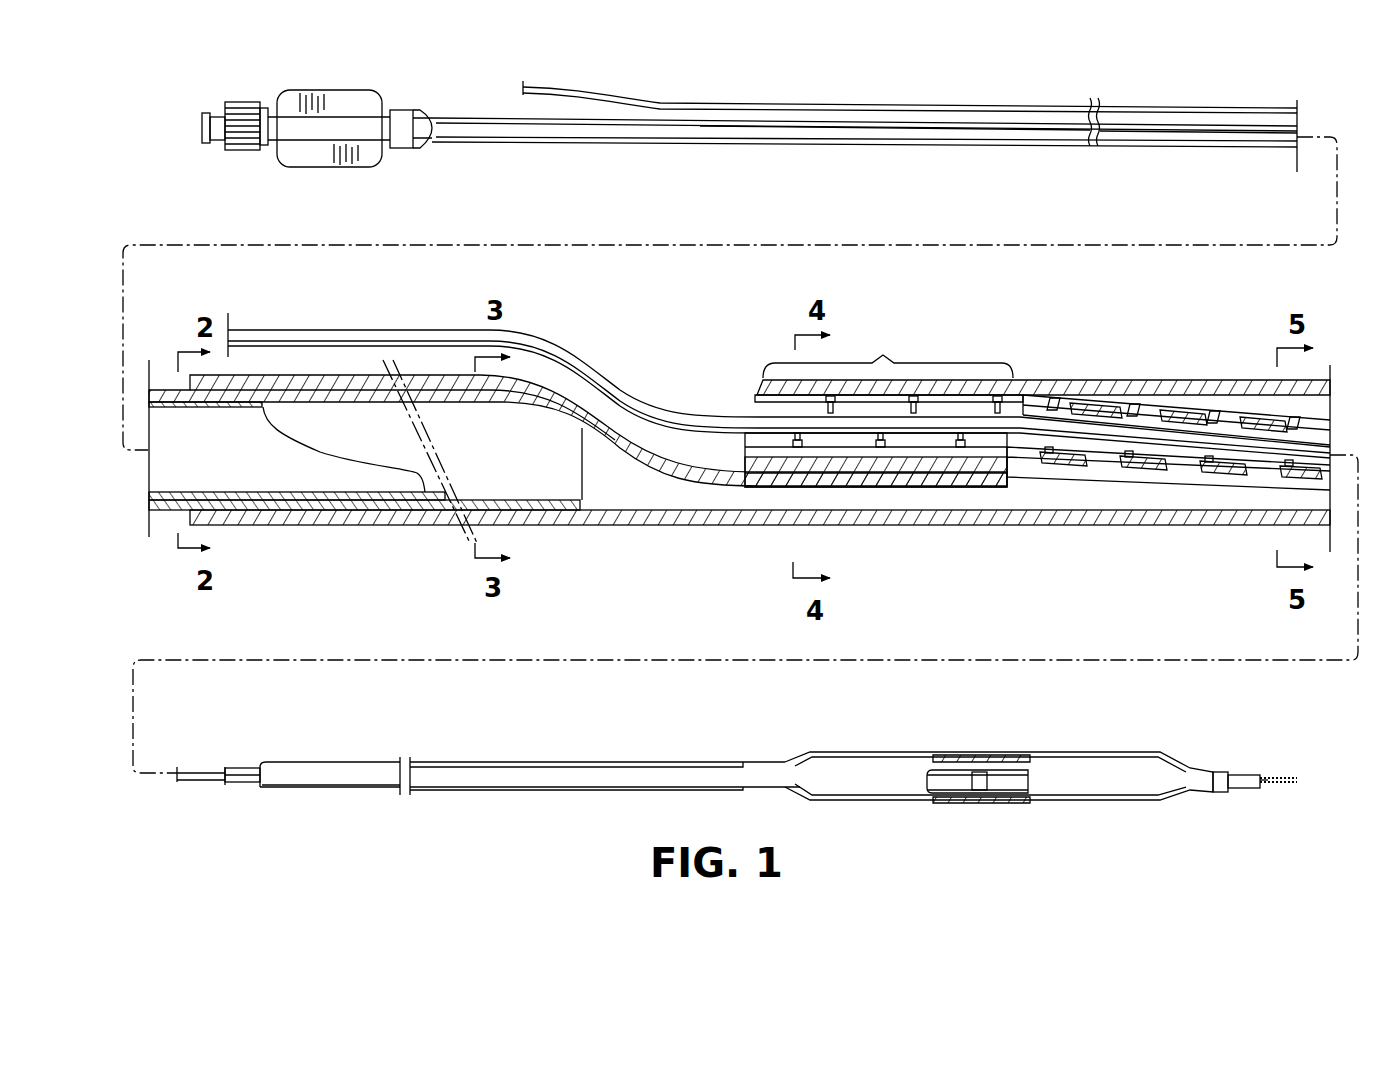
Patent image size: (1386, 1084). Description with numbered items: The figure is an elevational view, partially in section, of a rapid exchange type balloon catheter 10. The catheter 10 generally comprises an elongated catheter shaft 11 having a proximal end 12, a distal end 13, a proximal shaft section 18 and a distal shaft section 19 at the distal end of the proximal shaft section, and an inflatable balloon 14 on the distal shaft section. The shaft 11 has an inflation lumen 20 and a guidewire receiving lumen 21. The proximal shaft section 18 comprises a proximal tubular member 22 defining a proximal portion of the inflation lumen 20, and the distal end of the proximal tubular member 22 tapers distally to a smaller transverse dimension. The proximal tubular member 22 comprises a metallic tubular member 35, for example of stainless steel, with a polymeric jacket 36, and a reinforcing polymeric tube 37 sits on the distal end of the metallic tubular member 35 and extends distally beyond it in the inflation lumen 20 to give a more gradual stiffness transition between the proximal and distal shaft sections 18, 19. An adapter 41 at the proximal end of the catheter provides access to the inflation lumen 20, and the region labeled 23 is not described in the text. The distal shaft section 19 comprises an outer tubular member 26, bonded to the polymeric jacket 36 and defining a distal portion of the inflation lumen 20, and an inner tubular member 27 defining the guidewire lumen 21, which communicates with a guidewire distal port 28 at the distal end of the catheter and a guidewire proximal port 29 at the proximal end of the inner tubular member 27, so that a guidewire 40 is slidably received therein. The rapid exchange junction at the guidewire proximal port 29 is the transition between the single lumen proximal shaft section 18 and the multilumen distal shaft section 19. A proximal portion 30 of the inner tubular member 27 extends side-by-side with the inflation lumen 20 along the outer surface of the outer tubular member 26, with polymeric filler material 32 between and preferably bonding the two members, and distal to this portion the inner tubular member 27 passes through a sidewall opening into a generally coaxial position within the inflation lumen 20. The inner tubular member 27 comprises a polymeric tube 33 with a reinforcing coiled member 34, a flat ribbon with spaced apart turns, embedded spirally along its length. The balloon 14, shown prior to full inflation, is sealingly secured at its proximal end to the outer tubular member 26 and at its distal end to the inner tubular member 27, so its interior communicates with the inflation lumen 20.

The rapid exchange type balloon catheter 10 is at (826, 80).
The elongated catheter shaft 11 is at (475, 118).
The proximal end 12 is at (440, 108).
The distal end 13 is at (1238, 772).
The inflatable balloon 14 is at (1081, 752).
The proximal shaft section 18 is at (975, 148).
The distal shaft section 19 is at (331, 788).
The inflation lumen 20 is at (1083, 502).
The guidewire receiving lumen 21 is at (1153, 458).
The proximal tubular member 22 is at (1158, 148).
The hub lumen 23 is at (432, 146).
The outer tubular member 26 is at (430, 520).
The inner tubular member 27 is at (1226, 420).
The guidewire distal port 28 is at (1266, 787).
The guidewire proximal port 29 is at (755, 407).
The proximal portion of the inner tubular member 30 is at (888, 373).
The polymeric filler material 32 is at (868, 467).
The polymeric tube 33 is at (1122, 397).
The reinforcing coiled member 34 is at (1166, 410).
The metallic tubular member 35 is at (337, 515).
The polymeric jacket 36 is at (162, 530).
The reinforcing polymeric tube 37 is at (551, 508).
The guidewire 40 is at (606, 87).
The adapter 41 is at (378, 103).